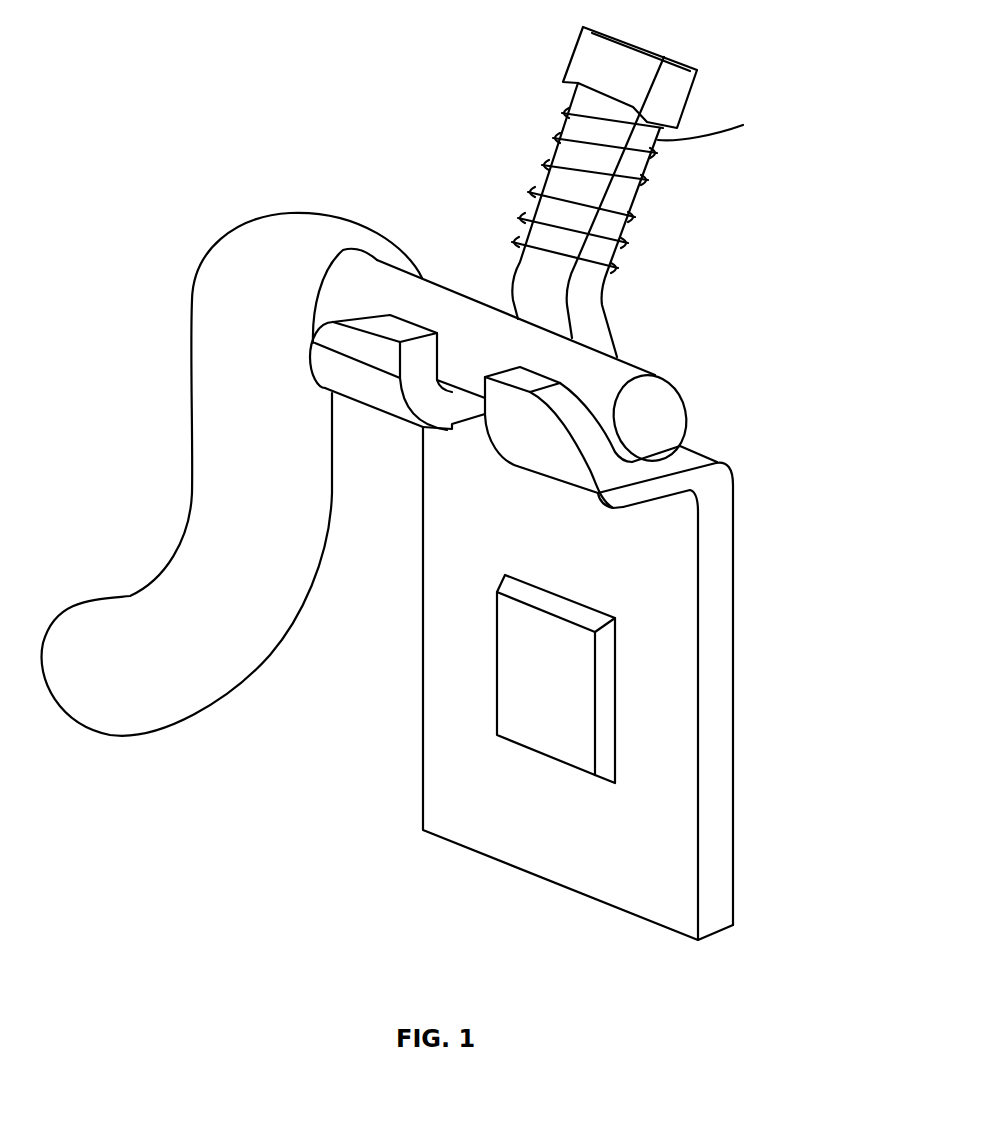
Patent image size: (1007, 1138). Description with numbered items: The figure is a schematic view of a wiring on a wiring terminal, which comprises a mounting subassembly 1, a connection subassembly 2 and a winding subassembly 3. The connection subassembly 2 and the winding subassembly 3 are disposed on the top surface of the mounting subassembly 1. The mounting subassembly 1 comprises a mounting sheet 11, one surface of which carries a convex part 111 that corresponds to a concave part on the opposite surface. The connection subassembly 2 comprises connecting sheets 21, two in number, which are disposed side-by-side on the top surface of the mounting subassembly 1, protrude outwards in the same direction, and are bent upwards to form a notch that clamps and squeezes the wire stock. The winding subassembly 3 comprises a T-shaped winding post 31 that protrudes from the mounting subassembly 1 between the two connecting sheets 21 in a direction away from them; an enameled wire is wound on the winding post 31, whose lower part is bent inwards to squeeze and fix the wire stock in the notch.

The mounting subassembly 1 is at (387, 777).
The mounting sheet 11 is at (657, 720).
The convex part 111 is at (550, 698).
The connection subassembly 2 is at (630, 338).
The connecting sheet 21 is at (350, 372).
The winding subassembly 3 is at (658, 228).
The winding post 31 is at (568, 185).